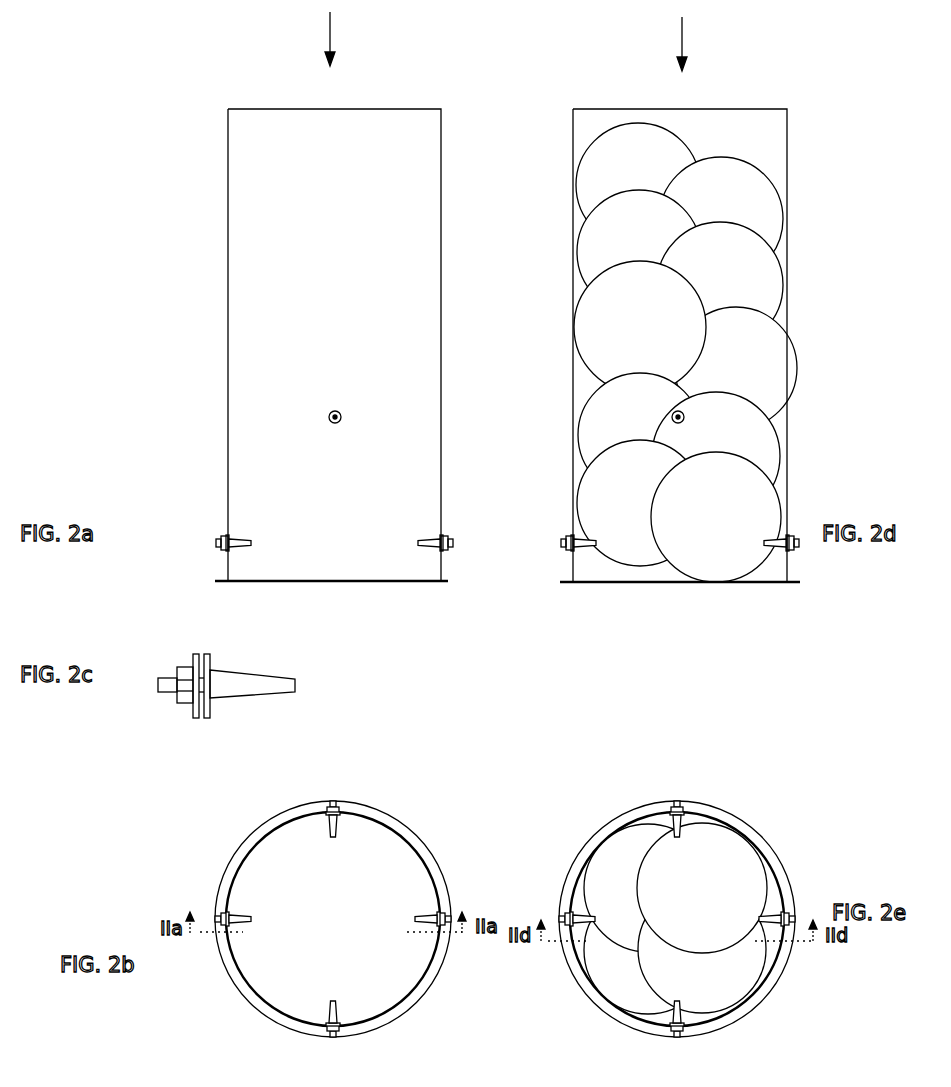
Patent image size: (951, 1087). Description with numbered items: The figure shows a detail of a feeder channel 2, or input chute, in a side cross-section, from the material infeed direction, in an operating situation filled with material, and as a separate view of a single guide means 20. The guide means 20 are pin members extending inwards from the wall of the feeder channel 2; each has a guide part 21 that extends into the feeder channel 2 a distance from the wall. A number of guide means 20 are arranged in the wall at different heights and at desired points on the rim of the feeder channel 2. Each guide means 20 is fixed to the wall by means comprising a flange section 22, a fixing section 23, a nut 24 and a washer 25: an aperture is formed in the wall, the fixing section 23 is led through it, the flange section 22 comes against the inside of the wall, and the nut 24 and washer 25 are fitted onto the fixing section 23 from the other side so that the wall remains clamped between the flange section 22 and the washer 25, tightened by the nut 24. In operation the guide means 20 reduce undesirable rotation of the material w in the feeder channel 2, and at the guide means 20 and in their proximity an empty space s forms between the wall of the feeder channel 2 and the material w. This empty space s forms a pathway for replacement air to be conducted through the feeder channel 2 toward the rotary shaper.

In FIG. 2A, the feeder channel 2 is at (233, 427).
In FIG. 2D, the feeder channel 2 is at (580, 432).
In FIG. 2B, the feeder channel 2 is at (233, 880).
In FIG. 2E, the feeder channel 2 is at (600, 845).
In FIG. 2A, the guide means 20 is at (330, 412).
In FIG. 2D, the guide means 20 is at (575, 540).
In FIG. 2C, the guide means 20 is at (203, 675).
In FIG. 2B, the guide means 20 is at (222, 912).
In FIG. 2E, the guide means 20 is at (673, 815).
In FIG. 2C, the guide part 21 is at (228, 686).
In FIG. 2C, the flange section 22 is at (207, 708).
In FIG. 2C, the fixing section 23 is at (160, 688).
In FIG. 2C, the nut 24 is at (188, 696).
In FIG. 2C, the washer 25 is at (196, 712).
In FIG. 2D, the material w is at (632, 327).
In FIG. 2E, the material w is at (612, 877).
In FIG. 2E, the empty space s is at (695, 818).